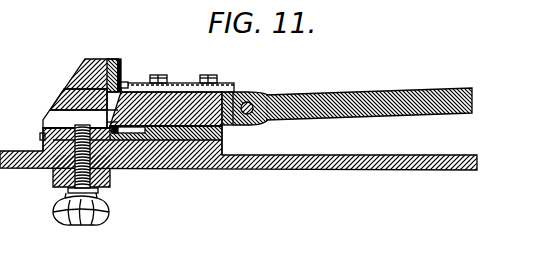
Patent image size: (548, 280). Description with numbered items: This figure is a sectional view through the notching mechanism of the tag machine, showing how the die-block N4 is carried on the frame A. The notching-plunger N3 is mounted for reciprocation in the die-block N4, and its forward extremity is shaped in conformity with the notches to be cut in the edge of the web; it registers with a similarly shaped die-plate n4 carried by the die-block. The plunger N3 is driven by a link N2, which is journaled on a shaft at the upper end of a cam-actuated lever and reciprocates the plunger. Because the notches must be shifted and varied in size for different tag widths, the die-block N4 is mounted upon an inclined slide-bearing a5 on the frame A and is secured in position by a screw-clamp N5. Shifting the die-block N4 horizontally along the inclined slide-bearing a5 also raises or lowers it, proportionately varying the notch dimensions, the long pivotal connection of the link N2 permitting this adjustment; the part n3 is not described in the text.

The frame A is at (318, 160).
The inclined slide-bearing a5 is at (156, 150).
The link N2 is at (362, 100).
The notching-plunger N3 is at (230, 93).
The die-block N4 is at (92, 80).
The clamp jaw band n3 is at (122, 104).
The die-plate n4 is at (121, 66).
The screw-clamp N5 is at (91, 224).